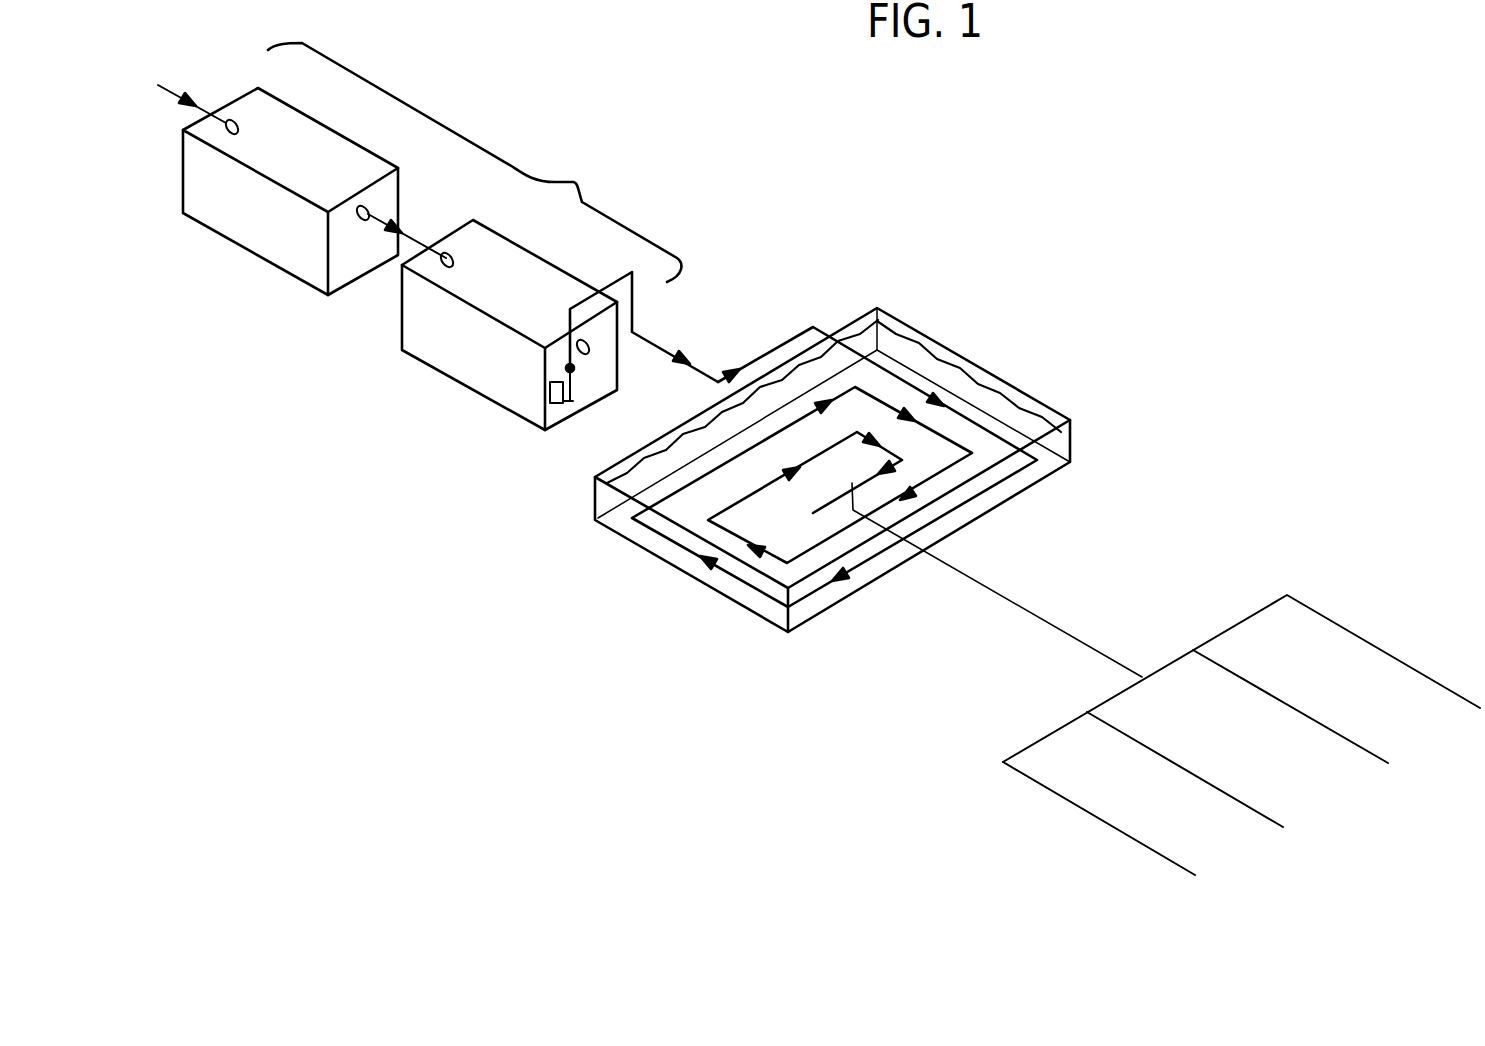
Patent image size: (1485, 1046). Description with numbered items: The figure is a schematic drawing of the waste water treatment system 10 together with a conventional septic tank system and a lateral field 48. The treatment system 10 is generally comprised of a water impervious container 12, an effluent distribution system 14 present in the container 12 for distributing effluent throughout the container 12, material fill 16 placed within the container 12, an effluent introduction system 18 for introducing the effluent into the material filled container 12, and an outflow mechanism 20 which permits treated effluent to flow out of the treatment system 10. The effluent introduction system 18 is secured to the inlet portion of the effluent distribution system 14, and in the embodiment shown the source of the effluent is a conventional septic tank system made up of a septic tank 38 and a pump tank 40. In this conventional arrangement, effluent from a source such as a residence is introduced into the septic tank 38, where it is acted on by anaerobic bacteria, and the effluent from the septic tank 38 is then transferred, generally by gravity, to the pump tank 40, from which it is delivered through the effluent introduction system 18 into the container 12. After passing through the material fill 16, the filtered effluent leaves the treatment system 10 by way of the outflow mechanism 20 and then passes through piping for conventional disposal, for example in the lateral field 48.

The waste water treatment system 10 is at (1066, 234).
The water impervious container 12 is at (618, 512).
The effluent distribution system 14 is at (898, 373).
The material fill 16 is at (962, 370).
The effluent introduction system 18 is at (590, 174).
The outflow mechanism 20 is at (965, 574).
The septic tank 38 is at (268, 237).
The pump tank 40 is at (436, 346).
The lateral field 48 is at (1359, 606).